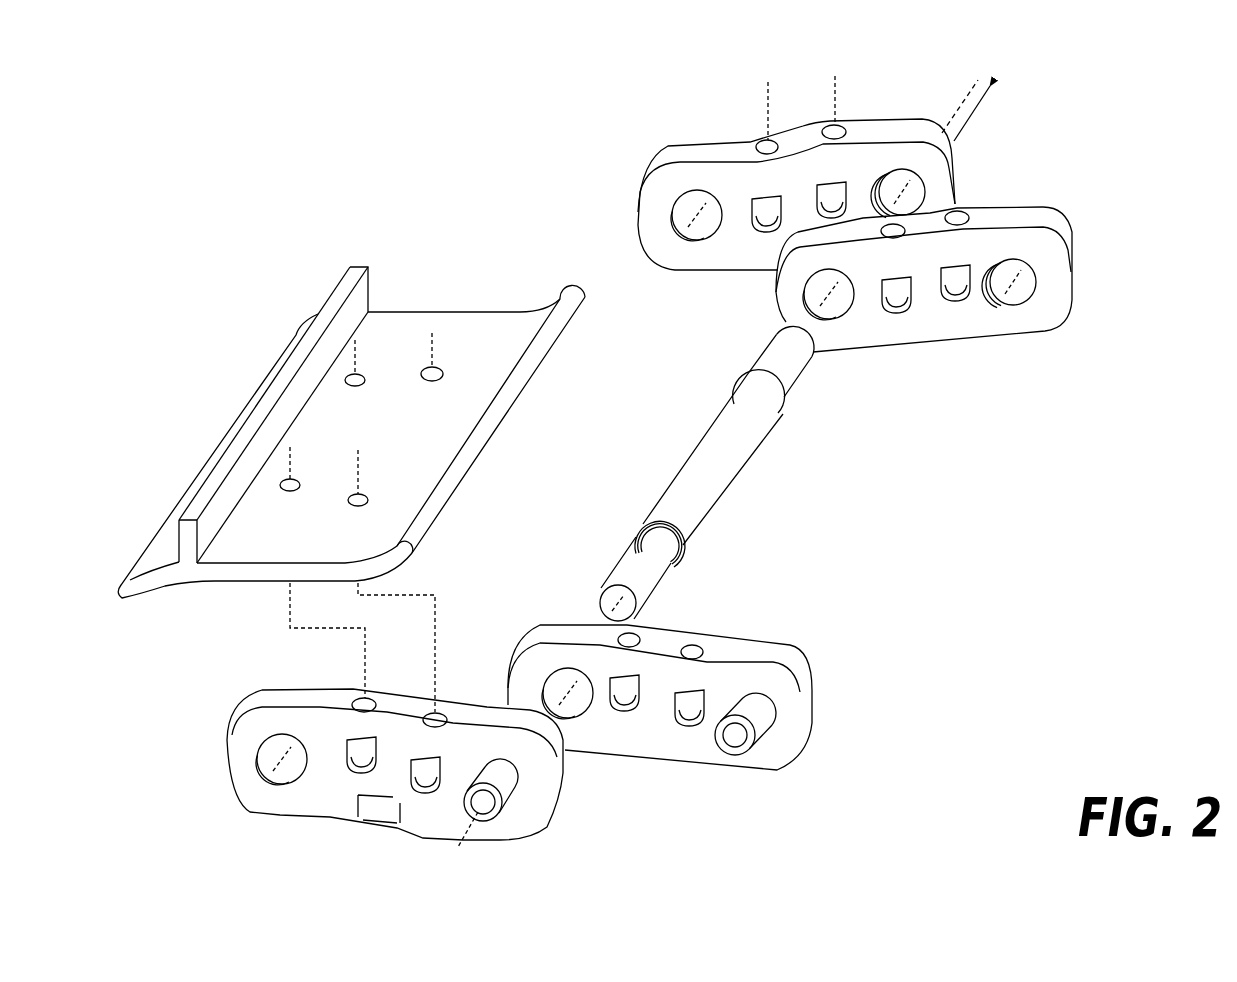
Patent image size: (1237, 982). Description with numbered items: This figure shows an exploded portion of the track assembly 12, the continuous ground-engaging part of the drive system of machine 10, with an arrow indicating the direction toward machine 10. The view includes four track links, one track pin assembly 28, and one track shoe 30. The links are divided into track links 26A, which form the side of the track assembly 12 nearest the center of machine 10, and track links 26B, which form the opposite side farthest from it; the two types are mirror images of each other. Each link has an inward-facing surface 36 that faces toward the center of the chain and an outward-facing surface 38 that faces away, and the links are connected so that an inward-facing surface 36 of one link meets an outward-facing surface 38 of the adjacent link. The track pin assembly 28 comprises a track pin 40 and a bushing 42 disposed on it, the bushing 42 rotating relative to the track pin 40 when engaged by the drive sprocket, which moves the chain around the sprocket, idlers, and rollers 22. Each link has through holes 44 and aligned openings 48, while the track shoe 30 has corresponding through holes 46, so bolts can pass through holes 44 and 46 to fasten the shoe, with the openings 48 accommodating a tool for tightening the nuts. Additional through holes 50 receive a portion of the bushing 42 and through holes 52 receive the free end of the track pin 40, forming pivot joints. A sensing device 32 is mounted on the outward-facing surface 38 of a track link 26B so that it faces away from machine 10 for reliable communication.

The machine 10 is at (1012, 87).
The track assembly 12 is at (1092, 512).
The rollers 22 is at (836, 775).
The track links 26A is at (824, 268).
The track links 26B is at (643, 757).
The track pin assembly 28 is at (709, 473).
The track shoe 30 is at (428, 312).
The sensing device 32 is at (377, 822).
The inward-facing surface 36 is at (712, 270).
The outward-facing surface 38 is at (665, 496).
The track pin 40 is at (622, 568).
The bushing 42 is at (748, 437).
The through holes 44 is at (832, 126).
The through holes 46 is at (428, 378).
The openings 48 is at (817, 198).
The through holes 50 is at (689, 194).
The through holes 52 is at (900, 170).